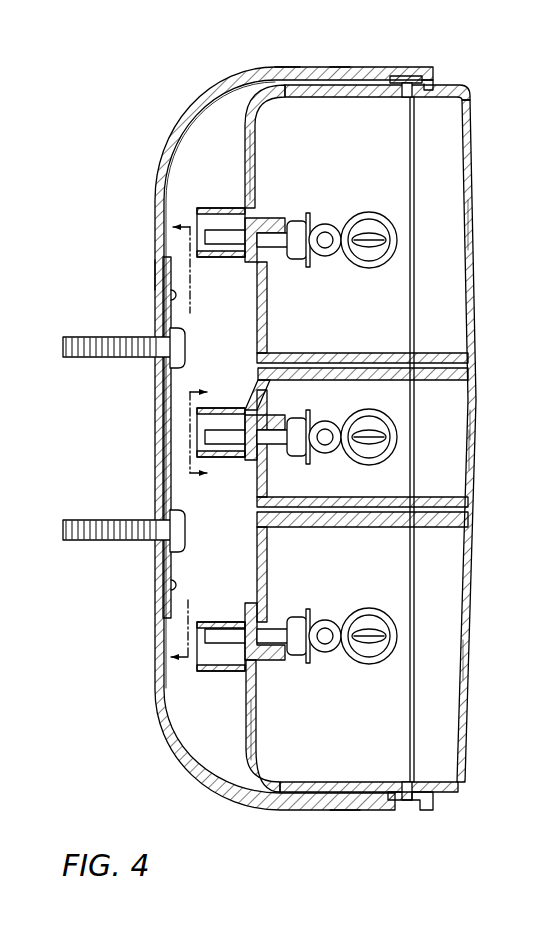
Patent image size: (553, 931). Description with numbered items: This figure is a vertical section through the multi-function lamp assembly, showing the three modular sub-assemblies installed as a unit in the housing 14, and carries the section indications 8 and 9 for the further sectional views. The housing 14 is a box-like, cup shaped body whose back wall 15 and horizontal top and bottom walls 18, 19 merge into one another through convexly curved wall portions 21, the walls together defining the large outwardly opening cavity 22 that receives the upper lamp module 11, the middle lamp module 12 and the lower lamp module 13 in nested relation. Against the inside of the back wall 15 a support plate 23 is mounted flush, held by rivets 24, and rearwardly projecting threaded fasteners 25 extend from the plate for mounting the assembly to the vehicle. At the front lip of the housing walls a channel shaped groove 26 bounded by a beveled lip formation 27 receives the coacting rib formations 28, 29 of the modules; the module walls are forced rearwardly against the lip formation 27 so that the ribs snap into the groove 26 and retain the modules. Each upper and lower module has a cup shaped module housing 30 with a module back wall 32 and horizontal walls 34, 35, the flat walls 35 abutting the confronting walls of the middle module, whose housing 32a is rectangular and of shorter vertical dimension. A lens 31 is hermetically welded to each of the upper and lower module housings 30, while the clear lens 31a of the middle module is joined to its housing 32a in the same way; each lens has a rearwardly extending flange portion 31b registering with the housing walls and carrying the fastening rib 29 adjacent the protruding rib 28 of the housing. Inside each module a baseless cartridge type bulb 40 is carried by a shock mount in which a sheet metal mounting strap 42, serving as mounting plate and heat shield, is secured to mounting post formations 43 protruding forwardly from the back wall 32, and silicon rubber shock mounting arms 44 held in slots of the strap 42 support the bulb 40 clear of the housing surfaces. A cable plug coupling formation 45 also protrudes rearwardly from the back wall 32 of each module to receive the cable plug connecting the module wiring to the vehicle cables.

The section line 8- 8 is at (180, 431).
The section line 9- 9 is at (199, 432).
The upper lamp module 11 is at (477, 226).
The middle lamp module 12 is at (478, 454).
The lower lamp module 13 is at (470, 652).
The lamp housing 14 is at (278, 62).
The back wall 15 is at (153, 273).
The top wall 18 is at (338, 67).
The bottom wall 19 is at (340, 812).
The convexly curved wall portions 21 is at (185, 140).
The cavity 22 is at (182, 178).
The support plate 23 is at (171, 566).
The rivets 24 is at (178, 300).
The threaded fasteners 25 is at (120, 520).
The channel shaped groove 26 is at (398, 78).
The beveled lip formation 27 is at (434, 84).
The protruding rib formation 28 is at (400, 800).
The fastening rib formation 29 is at (414, 82).
The module housing 30 is at (248, 160).
The lens 31 is at (475, 300).
The center module lens 31a is at (477, 428).
The lens flange portion 31b is at (436, 354).
The module back wall 32 is at (260, 160).
The center module housing 32a is at (253, 385).
The horizontal wall 34 is at (361, 86).
The horizontal wall 35 is at (323, 355).
The bulb 40 is at (370, 268).
The mounting strap 42 is at (305, 214).
The mounting post formations 43 is at (280, 250).
The shock mounting arms 44 is at (336, 226).
The cable plug coupling formation 45 is at (225, 210).